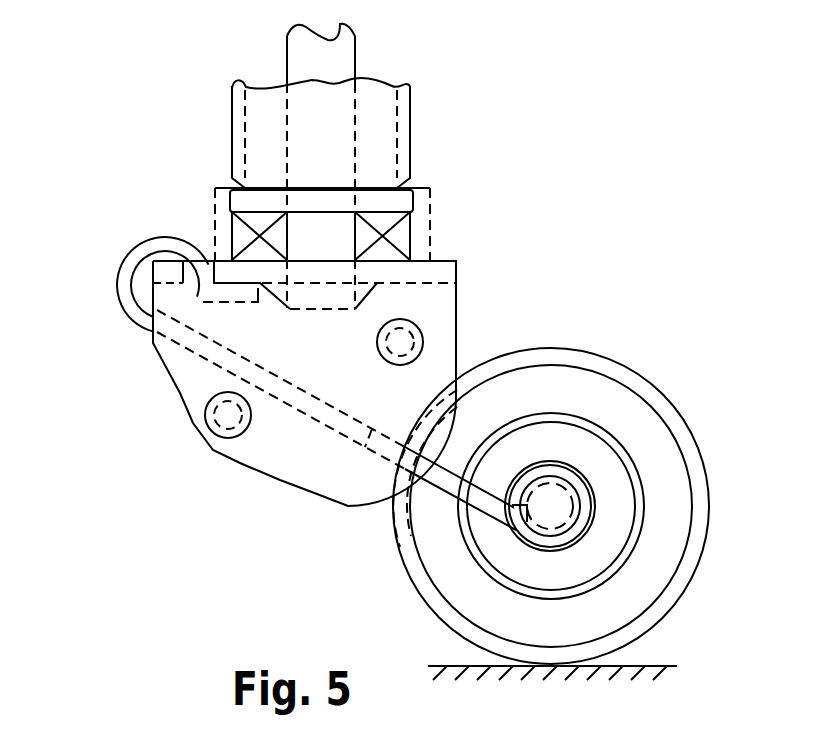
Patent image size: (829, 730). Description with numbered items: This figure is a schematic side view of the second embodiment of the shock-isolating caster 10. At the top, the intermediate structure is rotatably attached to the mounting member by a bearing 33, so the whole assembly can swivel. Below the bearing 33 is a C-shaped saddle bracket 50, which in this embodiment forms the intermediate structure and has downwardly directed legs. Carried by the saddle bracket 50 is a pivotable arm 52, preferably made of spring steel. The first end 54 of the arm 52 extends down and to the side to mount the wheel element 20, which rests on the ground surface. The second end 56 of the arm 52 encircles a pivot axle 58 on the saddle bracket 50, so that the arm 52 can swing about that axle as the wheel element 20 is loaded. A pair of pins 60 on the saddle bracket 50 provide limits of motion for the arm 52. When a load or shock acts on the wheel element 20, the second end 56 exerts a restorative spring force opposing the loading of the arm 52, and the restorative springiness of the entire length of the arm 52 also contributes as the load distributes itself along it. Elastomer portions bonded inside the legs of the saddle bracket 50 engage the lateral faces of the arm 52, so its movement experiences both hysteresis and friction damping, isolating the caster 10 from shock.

The caster 10 is at (241, 510).
The wheel element 20 is at (656, 363).
The bearing 33 is at (425, 219).
The C-shaped saddle bracket 50 is at (136, 363).
The pivotable arm 52 is at (109, 259).
The first end 54 is at (490, 533).
The second end 56 is at (237, 303).
The pivot axle 58 is at (167, 272).
The pins 60 is at (417, 326).